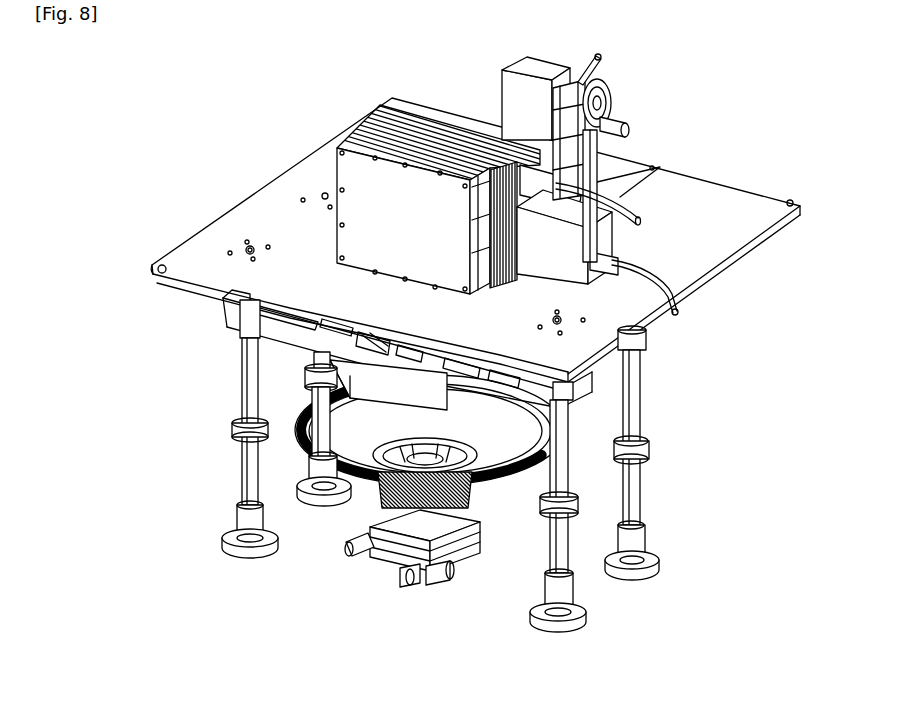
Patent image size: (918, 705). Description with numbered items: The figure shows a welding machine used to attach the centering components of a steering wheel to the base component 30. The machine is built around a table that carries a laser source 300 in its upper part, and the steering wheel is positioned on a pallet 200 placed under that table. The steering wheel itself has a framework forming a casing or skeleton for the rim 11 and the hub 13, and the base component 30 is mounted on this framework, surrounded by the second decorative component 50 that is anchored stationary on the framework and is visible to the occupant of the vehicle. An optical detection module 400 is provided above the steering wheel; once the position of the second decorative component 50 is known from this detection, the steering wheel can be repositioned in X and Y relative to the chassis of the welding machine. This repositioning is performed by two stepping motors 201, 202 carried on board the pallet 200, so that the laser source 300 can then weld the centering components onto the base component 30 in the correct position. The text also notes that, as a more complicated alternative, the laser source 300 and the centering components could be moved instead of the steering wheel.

The rim 11 is at (297, 408).
The hub 13 is at (296, 502).
The base component 30 is at (563, 447).
The second decorative component 50 is at (318, 476).
The pallet 200 is at (299, 571).
The stepping motor 201 is at (243, 613).
The stepping motor 202 is at (283, 557).
The laser source 300 is at (330, 192).
The optical detection module 400 is at (418, 372).